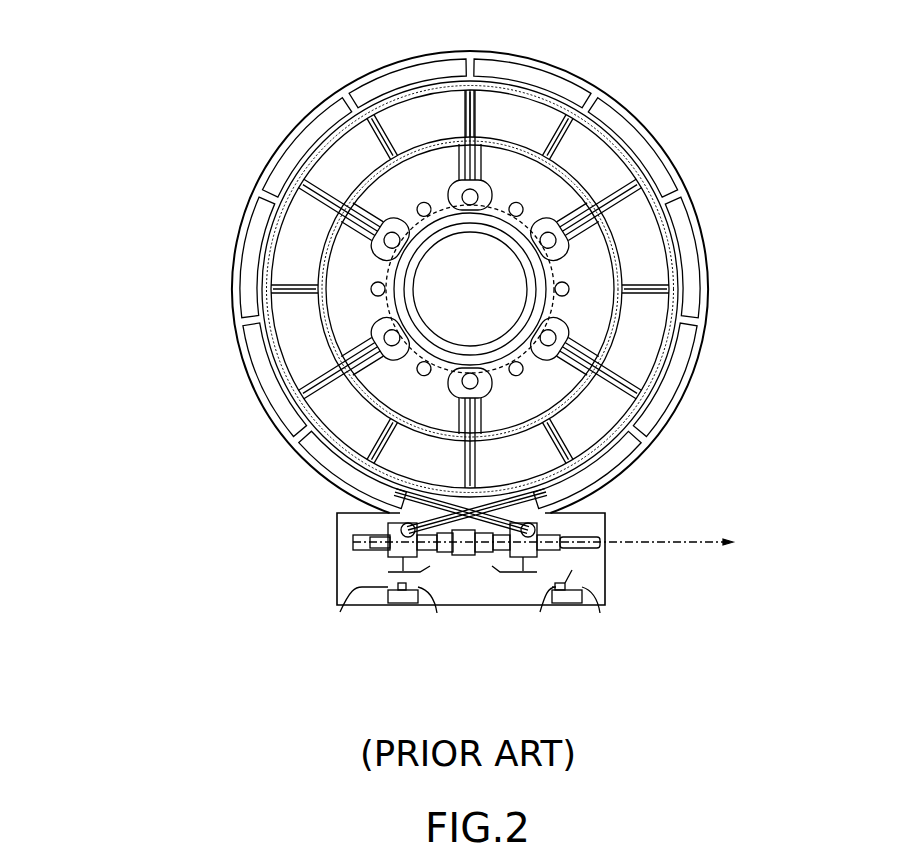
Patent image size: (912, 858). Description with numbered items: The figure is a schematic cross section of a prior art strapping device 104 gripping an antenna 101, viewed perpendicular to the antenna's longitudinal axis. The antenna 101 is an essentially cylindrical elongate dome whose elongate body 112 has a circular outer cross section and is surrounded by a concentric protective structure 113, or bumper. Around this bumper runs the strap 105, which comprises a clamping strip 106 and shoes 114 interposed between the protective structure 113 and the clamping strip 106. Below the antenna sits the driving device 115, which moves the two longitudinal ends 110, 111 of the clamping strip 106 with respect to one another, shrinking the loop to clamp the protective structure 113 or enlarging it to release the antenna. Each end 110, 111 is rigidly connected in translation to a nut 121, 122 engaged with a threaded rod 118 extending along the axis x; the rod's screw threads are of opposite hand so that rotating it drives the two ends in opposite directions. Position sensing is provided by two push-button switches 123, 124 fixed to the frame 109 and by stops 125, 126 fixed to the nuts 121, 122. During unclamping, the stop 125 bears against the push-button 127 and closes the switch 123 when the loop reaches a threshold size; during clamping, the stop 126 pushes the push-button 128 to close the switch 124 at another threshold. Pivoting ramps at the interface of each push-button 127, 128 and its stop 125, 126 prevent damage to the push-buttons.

The antenna 101 is at (318, 130).
The strapping device 104 is at (176, 152).
The strap 105 is at (226, 292).
The clamping strip 106 is at (307, 413).
The frame 109 is at (605, 88).
The longitudinal end of the clamping strip 110 is at (337, 517).
The longitudinal end of the clamping strip 111 is at (607, 522).
The elongate body 112 is at (417, 222).
The protective structure 113 is at (367, 78).
The shoes 114 is at (690, 266).
The driving device 115 is at (654, 527).
The threaded rod 118 is at (363, 550).
The nut 121 is at (397, 556).
The nut 122 is at (535, 545).
The push-button switch 123 is at (403, 622).
The push-button switch 124 is at (576, 620).
The stop 125 is at (395, 585).
The stop 126 is at (513, 575).
The push-button 127 is at (428, 598).
The push-button 128 is at (568, 583).